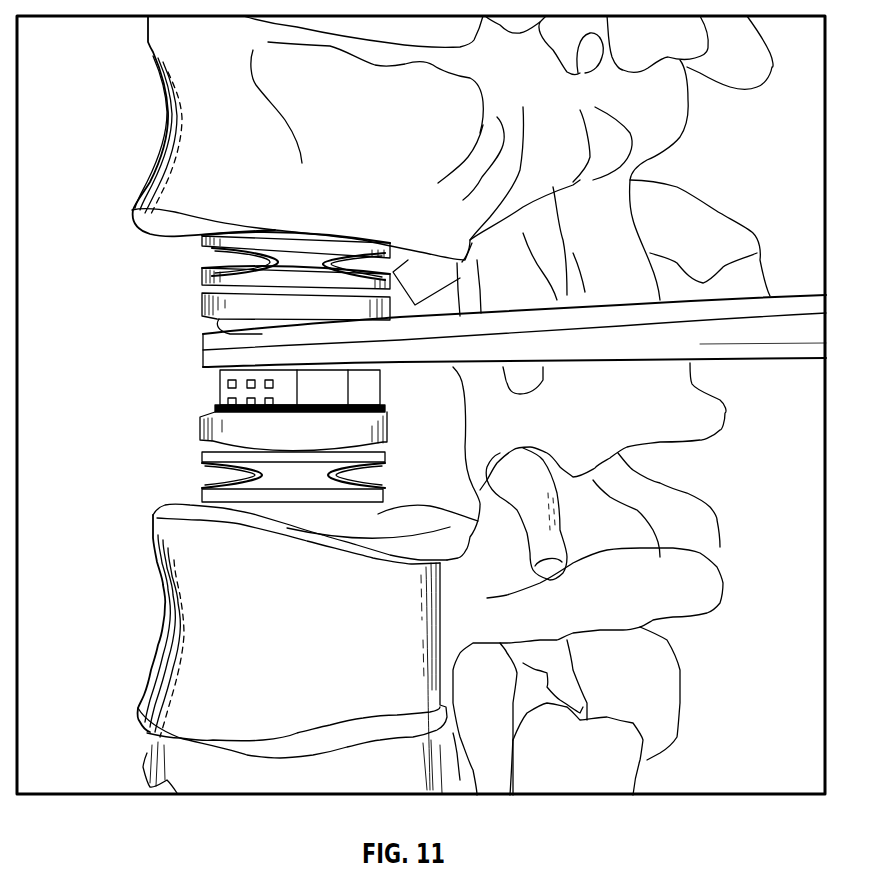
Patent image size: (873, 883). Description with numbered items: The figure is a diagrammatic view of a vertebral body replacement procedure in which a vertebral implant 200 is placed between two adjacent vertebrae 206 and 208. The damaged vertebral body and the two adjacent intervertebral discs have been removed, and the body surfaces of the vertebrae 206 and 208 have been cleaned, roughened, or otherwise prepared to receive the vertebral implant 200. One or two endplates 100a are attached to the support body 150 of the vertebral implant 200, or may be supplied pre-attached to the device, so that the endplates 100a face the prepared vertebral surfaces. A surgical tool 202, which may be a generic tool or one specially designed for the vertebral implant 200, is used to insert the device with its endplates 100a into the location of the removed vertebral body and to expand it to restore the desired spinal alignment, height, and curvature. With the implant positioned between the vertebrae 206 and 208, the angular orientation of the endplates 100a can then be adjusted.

The vertebra 206 is at (176, 135).
The vertebra 208 is at (161, 618).
The endplate 100a is at (202, 275).
The vertebral implant 200 is at (216, 383).
The support body 150 is at (217, 396).
The surgical tool 202 is at (774, 294).